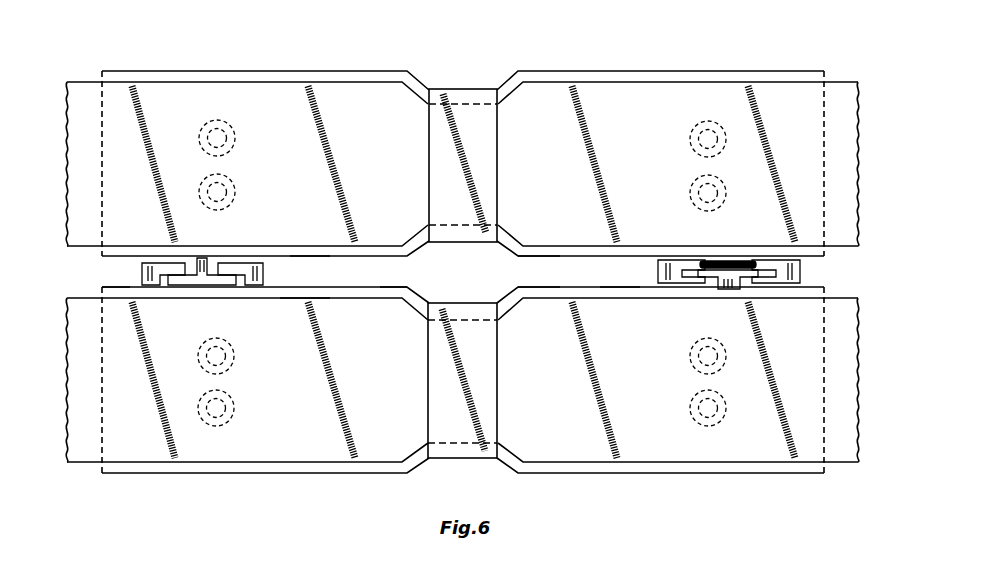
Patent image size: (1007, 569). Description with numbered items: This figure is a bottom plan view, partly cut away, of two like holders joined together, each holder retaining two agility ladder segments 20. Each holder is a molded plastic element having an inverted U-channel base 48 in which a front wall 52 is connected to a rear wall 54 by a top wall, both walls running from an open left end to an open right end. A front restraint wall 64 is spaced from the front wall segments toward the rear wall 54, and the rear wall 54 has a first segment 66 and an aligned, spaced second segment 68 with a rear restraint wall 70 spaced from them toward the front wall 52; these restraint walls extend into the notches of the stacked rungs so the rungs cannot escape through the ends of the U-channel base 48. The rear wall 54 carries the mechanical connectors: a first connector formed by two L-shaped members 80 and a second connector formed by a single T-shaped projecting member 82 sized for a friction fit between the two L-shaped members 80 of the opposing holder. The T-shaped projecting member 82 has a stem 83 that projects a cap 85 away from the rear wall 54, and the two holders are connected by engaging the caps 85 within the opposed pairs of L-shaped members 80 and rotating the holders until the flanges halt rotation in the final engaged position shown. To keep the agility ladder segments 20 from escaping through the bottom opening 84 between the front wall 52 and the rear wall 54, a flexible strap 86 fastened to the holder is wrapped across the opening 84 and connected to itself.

The agility ladder segment 20 is at (843, 72).
The U-channel base 48 is at (540, 287).
The front wall 52 is at (311, 71).
The rear wall 54 is at (113, 288).
The front restraint wall 64 is at (476, 226).
The first segment of rear wall 66 is at (388, 286).
The second segment of rear wall 68 is at (620, 288).
The rear restraint wall 70 is at (472, 106).
The L-shaped member 80 is at (141, 272).
The T-shaped projecting member 82 is at (210, 273).
The stem 83 is at (735, 280).
The bottom opening 84 is at (300, 298).
The cap 85 is at (692, 262).
The flexible strap 86 is at (497, 160).